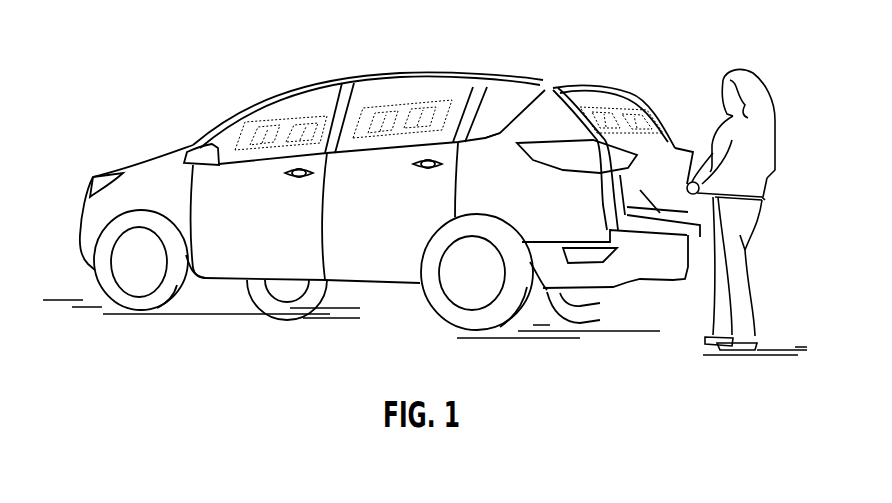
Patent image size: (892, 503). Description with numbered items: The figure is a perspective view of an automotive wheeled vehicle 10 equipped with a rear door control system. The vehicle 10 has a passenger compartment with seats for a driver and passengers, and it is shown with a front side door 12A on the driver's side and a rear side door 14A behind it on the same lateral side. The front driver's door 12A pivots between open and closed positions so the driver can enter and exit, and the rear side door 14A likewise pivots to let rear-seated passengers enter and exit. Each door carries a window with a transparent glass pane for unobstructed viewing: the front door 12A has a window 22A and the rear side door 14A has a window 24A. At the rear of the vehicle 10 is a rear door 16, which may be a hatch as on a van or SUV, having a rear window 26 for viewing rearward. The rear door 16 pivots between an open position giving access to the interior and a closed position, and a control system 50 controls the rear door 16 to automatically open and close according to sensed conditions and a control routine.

The automotive wheeled vehicle 10 is at (197, 113).
The front side door 12A is at (272, 241).
The rear side door 14A is at (394, 241).
The rear door 16 is at (675, 238).
The window 22A is at (312, 112).
The window 24A is at (418, 92).
The rear window 26 is at (595, 102).
The control system 50 is at (672, 86).